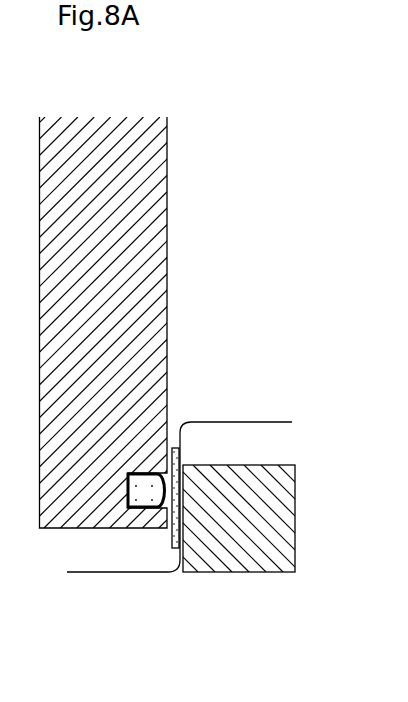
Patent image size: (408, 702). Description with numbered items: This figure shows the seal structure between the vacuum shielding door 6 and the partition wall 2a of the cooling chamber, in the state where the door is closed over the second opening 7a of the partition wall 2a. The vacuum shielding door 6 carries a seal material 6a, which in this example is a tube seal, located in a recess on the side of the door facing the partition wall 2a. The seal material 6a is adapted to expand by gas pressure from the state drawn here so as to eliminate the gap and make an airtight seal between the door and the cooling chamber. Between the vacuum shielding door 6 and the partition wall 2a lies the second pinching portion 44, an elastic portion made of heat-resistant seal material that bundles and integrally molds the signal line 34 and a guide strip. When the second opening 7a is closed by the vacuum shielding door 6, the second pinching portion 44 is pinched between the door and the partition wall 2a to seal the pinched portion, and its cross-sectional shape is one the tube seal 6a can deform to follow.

The vacuum shielding door 6 is at (140, 256).
The second opening 7a is at (212, 198).
The seal material 6a is at (145, 495).
The second pinching portion 44 is at (171, 546).
The signal line 34 is at (235, 420).
The partition wall 2a is at (252, 547).